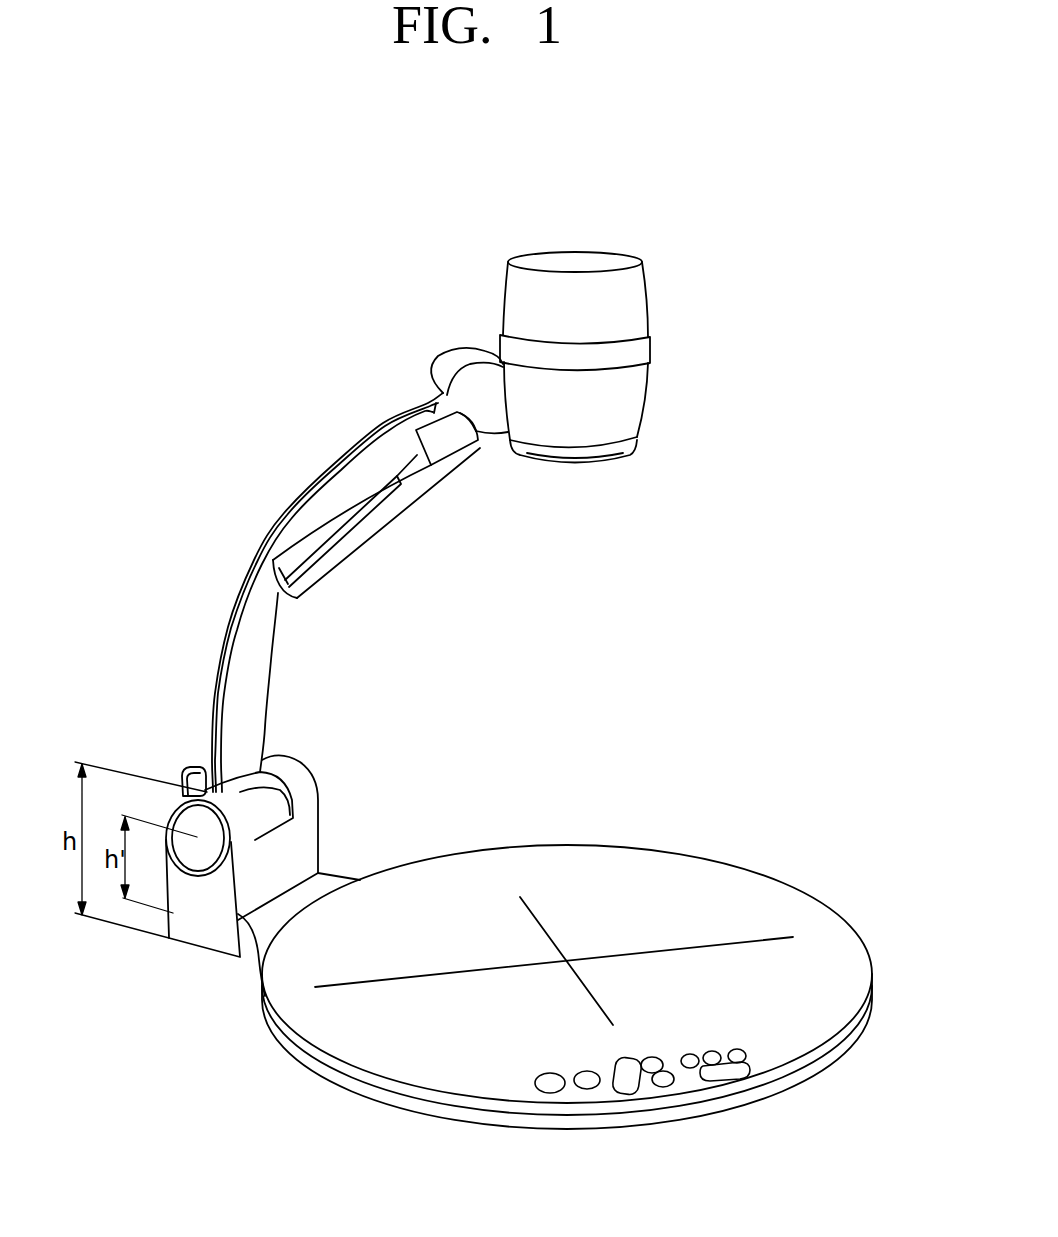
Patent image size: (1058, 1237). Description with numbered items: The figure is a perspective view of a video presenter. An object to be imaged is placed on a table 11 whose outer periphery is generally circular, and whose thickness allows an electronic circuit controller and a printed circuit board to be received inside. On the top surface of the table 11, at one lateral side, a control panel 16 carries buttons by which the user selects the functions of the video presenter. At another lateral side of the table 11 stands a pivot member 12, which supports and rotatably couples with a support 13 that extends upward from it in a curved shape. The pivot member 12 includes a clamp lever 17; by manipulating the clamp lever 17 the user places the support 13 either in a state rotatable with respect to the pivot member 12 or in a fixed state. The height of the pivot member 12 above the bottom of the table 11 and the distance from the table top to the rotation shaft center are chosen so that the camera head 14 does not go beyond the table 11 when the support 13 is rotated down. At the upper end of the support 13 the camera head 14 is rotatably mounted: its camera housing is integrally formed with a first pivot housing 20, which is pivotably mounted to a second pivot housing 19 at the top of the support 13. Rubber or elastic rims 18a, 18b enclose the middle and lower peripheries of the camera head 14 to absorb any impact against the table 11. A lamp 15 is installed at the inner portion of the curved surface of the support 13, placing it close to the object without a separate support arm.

The table 11 is at (837, 950).
The pivot member 12 is at (212, 907).
The support 13 is at (232, 632).
The camera head 14 is at (617, 298).
The lamp 15 is at (388, 560).
The control panel 16 is at (718, 1035).
The clamp lever 17 is at (195, 775).
The rubber rim 18a is at (633, 350).
The rubber rim 18b is at (627, 443).
The second pivot housing 19 is at (447, 363).
The first pivot housing 20 is at (487, 405).